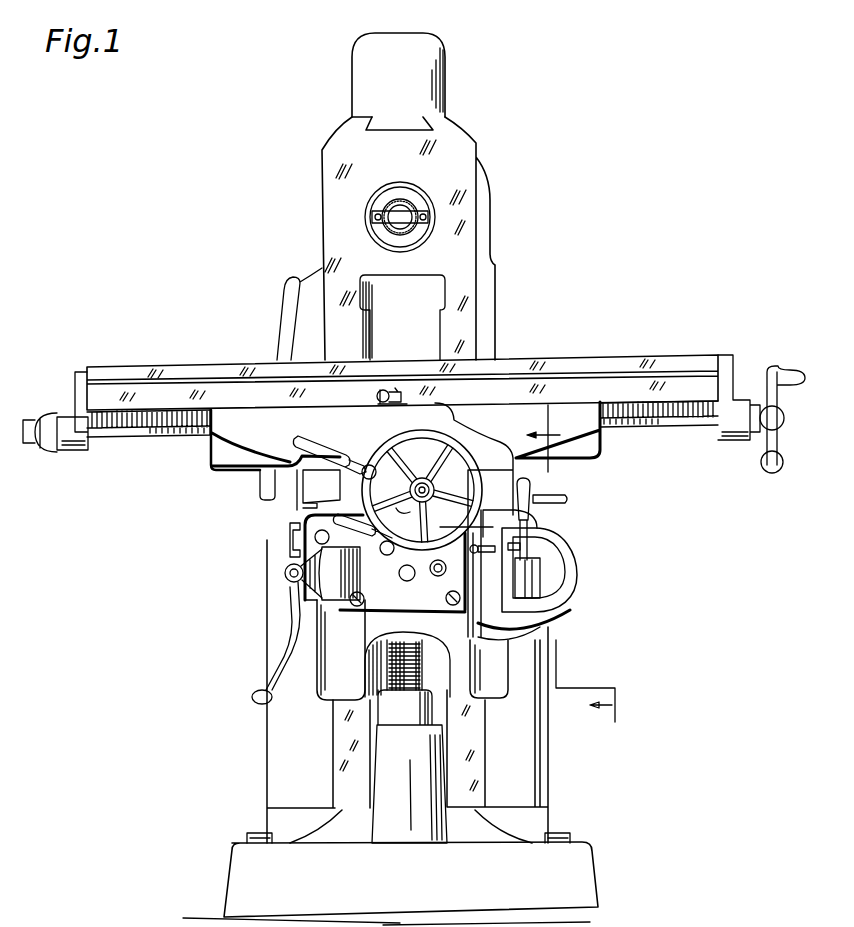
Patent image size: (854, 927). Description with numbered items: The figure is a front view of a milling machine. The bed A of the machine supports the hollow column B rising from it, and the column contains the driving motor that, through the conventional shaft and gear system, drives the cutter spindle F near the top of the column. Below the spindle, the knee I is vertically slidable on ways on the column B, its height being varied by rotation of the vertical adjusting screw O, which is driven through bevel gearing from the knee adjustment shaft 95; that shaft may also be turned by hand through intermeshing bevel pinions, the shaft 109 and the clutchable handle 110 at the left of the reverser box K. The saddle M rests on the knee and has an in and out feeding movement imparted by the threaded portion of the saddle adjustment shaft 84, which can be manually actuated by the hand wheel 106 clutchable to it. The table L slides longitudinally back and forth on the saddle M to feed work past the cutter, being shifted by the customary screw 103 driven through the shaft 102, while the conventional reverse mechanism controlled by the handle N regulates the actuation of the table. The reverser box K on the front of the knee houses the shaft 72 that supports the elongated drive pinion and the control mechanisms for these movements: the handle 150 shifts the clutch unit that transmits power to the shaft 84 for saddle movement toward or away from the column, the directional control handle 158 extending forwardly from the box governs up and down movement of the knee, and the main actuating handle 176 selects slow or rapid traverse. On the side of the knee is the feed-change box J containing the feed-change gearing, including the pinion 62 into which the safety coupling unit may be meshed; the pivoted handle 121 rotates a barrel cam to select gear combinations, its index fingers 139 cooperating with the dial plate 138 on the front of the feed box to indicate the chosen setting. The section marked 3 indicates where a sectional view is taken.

The cutter spindle F is at (417, 229).
The table L is at (152, 400).
The handle N is at (383, 387).
The shaft 102 is at (128, 438).
The screw 103 is at (168, 437).
The saddle M is at (272, 443).
The handle 150 is at (308, 437).
The hand wheel 106 is at (455, 438).
The shaft 84 is at (486, 520).
The pinion 62 is at (396, 503).
The shaft 72 is at (476, 524).
The reverser box K is at (385, 563).
The main actuating handle 176 is at (362, 535).
The shaft 95 is at (400, 573).
The shaft 109 is at (286, 573).
The clutchable handle 110 is at (286, 592).
The handle 121 is at (548, 483).
The feed-change box J is at (570, 593).
The index fingers 139 is at (522, 546).
The dial plate 138 is at (507, 577).
The directional control handle 158 is at (530, 618).
The knee I is at (363, 692).
The vertical adjusting screw O is at (397, 672).
The hollow column B is at (283, 733).
The bed A is at (238, 863).
The section line 3- 3 is at (585, 563).